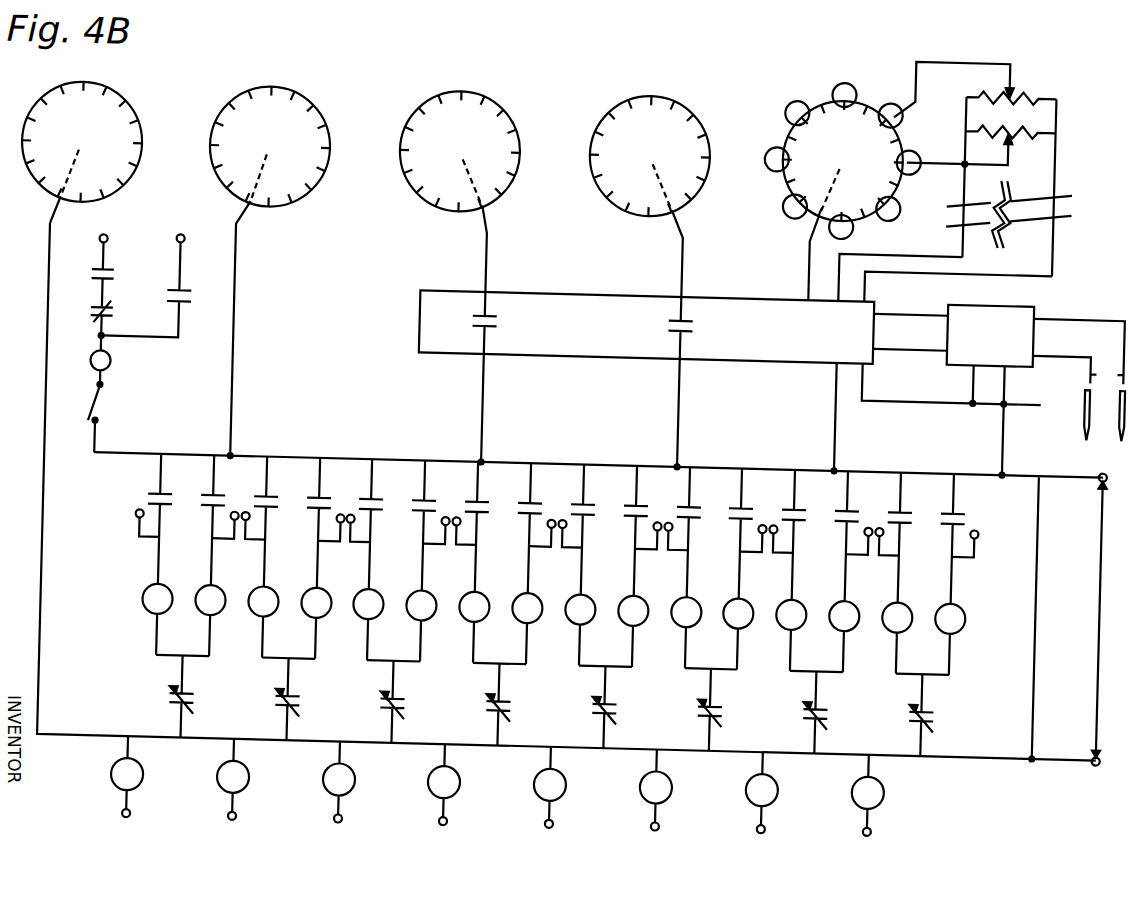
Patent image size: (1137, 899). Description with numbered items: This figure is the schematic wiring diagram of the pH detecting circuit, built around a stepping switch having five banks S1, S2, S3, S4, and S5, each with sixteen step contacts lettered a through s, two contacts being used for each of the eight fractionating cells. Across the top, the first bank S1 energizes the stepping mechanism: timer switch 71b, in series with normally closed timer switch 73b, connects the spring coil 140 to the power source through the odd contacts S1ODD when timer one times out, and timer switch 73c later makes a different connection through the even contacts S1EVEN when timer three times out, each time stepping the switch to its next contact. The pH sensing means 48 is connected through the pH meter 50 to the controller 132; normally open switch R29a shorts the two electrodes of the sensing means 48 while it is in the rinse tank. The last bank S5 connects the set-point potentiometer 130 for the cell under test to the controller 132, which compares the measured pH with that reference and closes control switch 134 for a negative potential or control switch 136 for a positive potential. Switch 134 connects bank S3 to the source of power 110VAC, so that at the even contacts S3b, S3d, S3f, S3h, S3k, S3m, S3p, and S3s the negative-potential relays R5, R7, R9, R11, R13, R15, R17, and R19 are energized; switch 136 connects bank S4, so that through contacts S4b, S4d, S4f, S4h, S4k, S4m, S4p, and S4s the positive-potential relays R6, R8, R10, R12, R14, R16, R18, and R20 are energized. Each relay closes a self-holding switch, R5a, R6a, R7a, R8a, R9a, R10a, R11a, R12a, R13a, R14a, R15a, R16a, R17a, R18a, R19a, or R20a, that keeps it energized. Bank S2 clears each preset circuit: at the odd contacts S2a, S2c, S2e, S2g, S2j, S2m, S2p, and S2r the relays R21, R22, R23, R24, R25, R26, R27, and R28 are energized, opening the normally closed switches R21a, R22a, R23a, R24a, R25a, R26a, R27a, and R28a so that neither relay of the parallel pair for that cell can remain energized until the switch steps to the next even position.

The first bank of stepping switch S1 is at (82, 152).
The second bank of stepping switch S2 is at (267, 260).
The third bank of stepping switch S3 is at (459, 203).
The fourth bank of stepping switch S4 is at (649, 208).
The fifth bank of stepping switch S5 is at (841, 192).
The set-point potentiometer 130 is at (1030, 72).
The controller 132 is at (422, 320).
The control switch 134 is at (520, 308).
The control switch 136 is at (716, 309).
The pH meter 50 is at (953, 335).
The pH sensing means 48 is at (1102, 404).
The normally open switch R29a is at (1106, 334).
The spring coil 140 is at (114, 359).
The timer switch 71b is at (90, 277).
The timer switch 73b is at (88, 316).
The timer switch 73c is at (216, 300).
The odd contacts of bank S1 S1ODD is at (85, 231).
The even contacts of bank S1 S1EVEN is at (174, 231).
The source of power 110VAC is at (1084, 619).
The relay R5 is at (147, 619).
The relay R6 is at (200, 620).
The relay R7 is at (253, 622).
The relay R8 is at (306, 623).
The relay R9 is at (358, 624).
The relay R10 is at (406, 625).
The relay R11 is at (459, 627).
The relay R12 is at (512, 628).
The relay R13 is at (565, 629).
The relay R14 is at (618, 631).
The relay R15 is at (671, 632).
The relay R16 is at (723, 633).
The relay R17 is at (776, 635).
The relay R18 is at (829, 636).
The relay R19 is at (882, 637).
The relay R20 is at (935, 639).
The relay switch R5a is at (150, 518).
The relay switch R6a is at (203, 519).
The relay switch R7a is at (256, 521).
The relay switch R8a is at (309, 522).
The relay switch R9a is at (361, 523).
The relay switch R10a is at (409, 525).
The relay switch R11a is at (462, 526).
The relay switch R12a is at (515, 527).
The relay switch R13a is at (568, 529).
The relay switch R14a is at (621, 530).
The relay switch R15a is at (674, 531).
The relay switch R16a is at (726, 533).
The relay switch R17a is at (779, 534).
The relay switch R18a is at (832, 535).
The relay switch R19a is at (885, 537).
The relay switch R20a is at (938, 538).
The relay R21 is at (141, 773).
The relay R22 is at (247, 775).
The relay R23 is at (353, 778).
The relay R24 is at (458, 781).
The relay R25 is at (564, 783).
The relay R26 is at (670, 786).
The relay R27 is at (777, 789).
The relay R28 is at (882, 791).
The normally closed switch R21a is at (201, 697).
The normally closed switch R22a is at (306, 700).
The normally closed switch R23a is at (411, 703).
The normally closed switch R24a is at (517, 705).
The normally closed switch R25a is at (623, 708).
The normally closed switch R26a is at (729, 711).
The normally closed switch R27a is at (834, 713).
The normally closed switch R28a is at (940, 716).
The bank S3 contact b S3b is at (144, 546).
The bank S3 contact d S3d is at (250, 549).
The bank S3 contact f S3f is at (355, 551).
The bank S3 contact h S3h is at (461, 554).
The bank S3 contact k S3k is at (567, 557).
The bank S3 contact m S3m is at (673, 560).
The bank S3 contact p S3p is at (778, 562).
The bank S3 contact s S3s is at (884, 565).
The bank S4 contact b S4b is at (227, 548).
The bank S4 contact d S4d is at (333, 551).
The bank S4 contact f S4f is at (438, 554).
The bank S4 contact h S4h is at (544, 556).
The bank S4 contact k S4k is at (650, 559).
The bank S4 contact m S4m is at (755, 562).
The bank S4 contact p S4p is at (861, 564).
The bank S4 contact s S4s is at (967, 567).
The bank S2 contact a S2a is at (141, 818).
The bank S2 contact c S2c is at (247, 821).
The bank S2 contact e S2e is at (353, 823).
The bank S2 contact g S2g is at (458, 826).
The bank S2 contact j S2j is at (562, 829).
The bank S2 contact m S2m is at (673, 831).
The bank S2 contact p S2p is at (776, 834).
The bank S2 contact r S2r is at (882, 837).